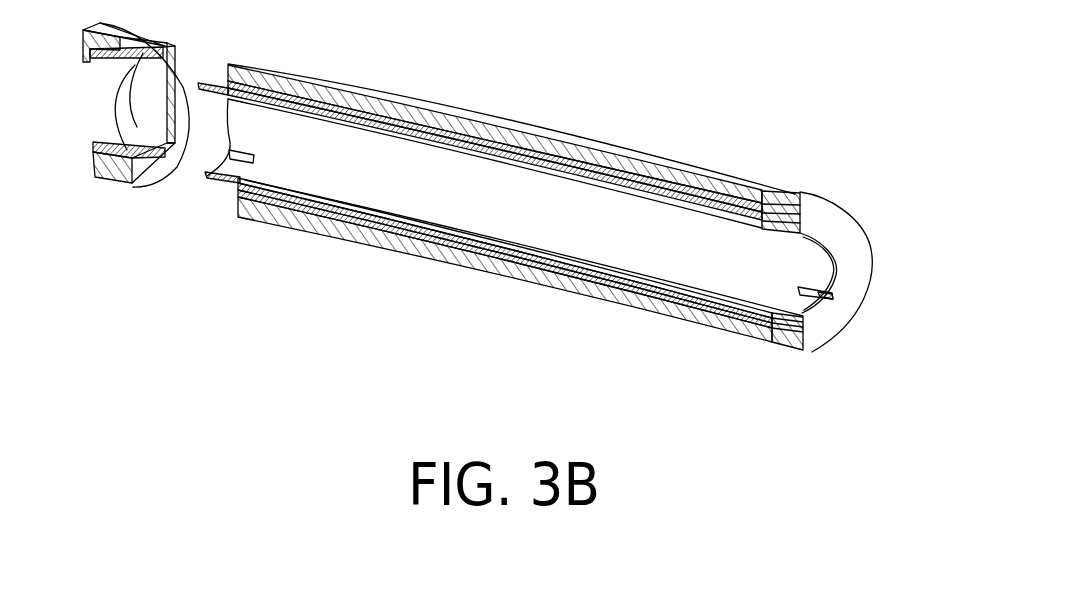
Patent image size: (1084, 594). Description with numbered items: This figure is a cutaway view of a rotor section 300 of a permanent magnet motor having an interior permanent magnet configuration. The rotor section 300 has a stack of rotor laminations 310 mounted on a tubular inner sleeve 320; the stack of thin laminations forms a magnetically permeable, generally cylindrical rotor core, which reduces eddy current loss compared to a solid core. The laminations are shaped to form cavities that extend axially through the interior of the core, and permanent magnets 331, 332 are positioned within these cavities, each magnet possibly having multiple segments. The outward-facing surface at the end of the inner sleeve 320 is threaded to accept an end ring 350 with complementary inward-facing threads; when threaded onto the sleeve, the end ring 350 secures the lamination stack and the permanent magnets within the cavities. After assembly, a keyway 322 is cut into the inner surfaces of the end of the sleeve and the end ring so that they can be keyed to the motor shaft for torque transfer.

The rotor section 300 is at (498, 98).
The rotor laminations 310 is at (643, 158).
The tubular inner sleeve 320 is at (527, 165).
The permanent magnet 331 is at (707, 197).
The permanent magnet 332 is at (680, 300).
The end ring 350 is at (838, 232).
The keyway 322 is at (825, 302).